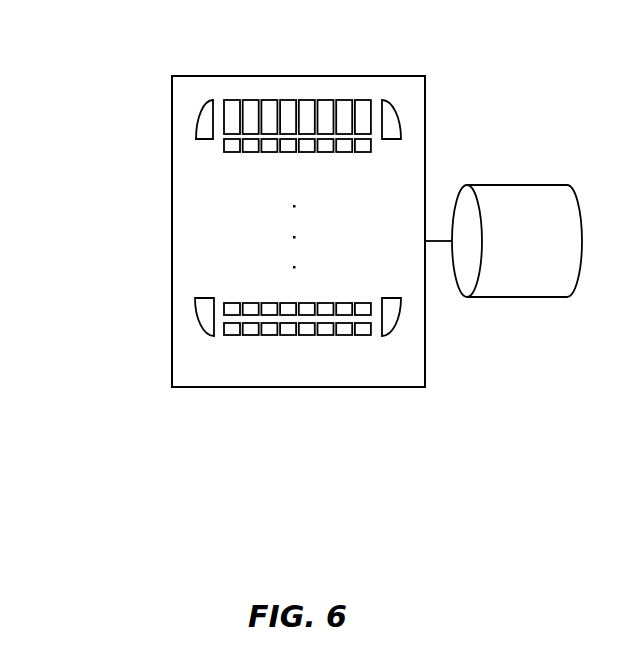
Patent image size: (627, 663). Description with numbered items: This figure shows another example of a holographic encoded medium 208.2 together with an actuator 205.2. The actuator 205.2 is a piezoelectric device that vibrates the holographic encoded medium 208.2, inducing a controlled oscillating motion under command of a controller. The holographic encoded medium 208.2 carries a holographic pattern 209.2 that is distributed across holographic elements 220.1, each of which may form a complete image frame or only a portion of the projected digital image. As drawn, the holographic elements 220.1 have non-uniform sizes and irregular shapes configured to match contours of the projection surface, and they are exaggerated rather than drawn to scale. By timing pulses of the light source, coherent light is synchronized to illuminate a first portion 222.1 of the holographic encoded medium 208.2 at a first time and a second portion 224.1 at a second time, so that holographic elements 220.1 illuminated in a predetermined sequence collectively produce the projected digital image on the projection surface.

The holographic encoded medium 208.2 is at (172, 354).
The holographic pattern 209.2 is at (198, 99).
The first portion 222.1 is at (327, 107).
The holographic elements 220.1 is at (210, 161).
The second portion 224.1 is at (260, 335).
The actuator 205.2 is at (475, 297).